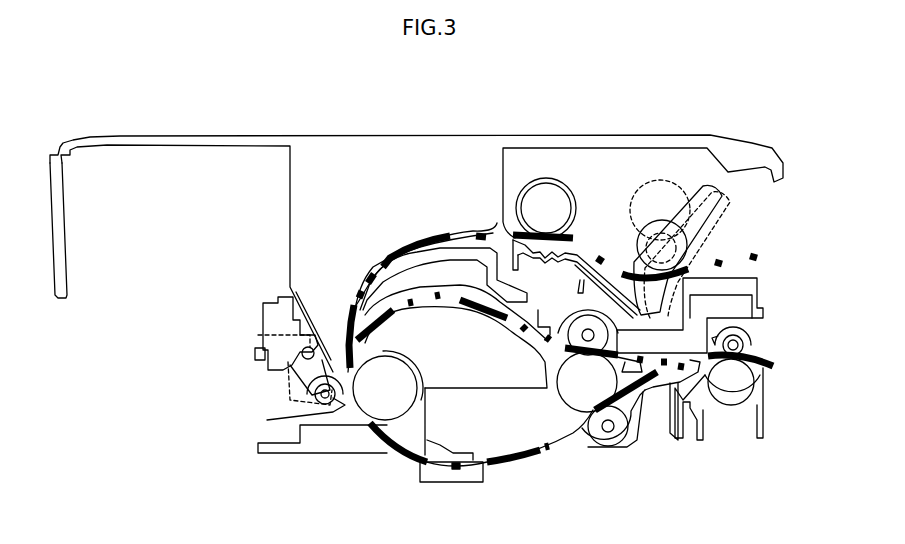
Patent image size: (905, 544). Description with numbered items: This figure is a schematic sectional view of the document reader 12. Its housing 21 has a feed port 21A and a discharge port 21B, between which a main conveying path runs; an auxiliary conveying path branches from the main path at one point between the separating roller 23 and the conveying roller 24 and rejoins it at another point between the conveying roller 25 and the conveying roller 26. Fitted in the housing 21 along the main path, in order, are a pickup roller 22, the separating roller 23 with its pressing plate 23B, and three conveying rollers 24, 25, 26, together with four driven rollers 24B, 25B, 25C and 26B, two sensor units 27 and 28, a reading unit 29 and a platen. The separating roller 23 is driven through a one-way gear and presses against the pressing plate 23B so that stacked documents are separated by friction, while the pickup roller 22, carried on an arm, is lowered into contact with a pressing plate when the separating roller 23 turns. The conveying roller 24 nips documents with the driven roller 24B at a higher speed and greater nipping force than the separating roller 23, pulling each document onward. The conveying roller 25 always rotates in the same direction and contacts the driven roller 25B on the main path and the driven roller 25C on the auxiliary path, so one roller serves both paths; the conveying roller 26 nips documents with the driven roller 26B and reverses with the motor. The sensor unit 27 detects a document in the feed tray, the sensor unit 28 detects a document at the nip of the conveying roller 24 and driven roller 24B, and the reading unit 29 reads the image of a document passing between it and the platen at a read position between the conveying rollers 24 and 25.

The document reader 12 is at (666, 120).
The housing 21 is at (750, 148).
The feed port 21A is at (787, 245).
The discharge port 21B is at (773, 367).
The pickup roller 22 is at (640, 243).
The separating roller 23 is at (580, 200).
The pressing plate 23B is at (497, 223).
The conveying roller 24 is at (368, 430).
The driven roller 24B is at (323, 395).
The conveying roller 25 is at (582, 403).
The driven roller 25B is at (612, 440).
The driven roller 25C is at (578, 307).
The conveying roller 26 is at (777, 378).
The driven roller 26B is at (757, 330).
The sensor unit 27 is at (717, 222).
The sensor unit 28 is at (257, 358).
The reading unit 29 is at (432, 483).